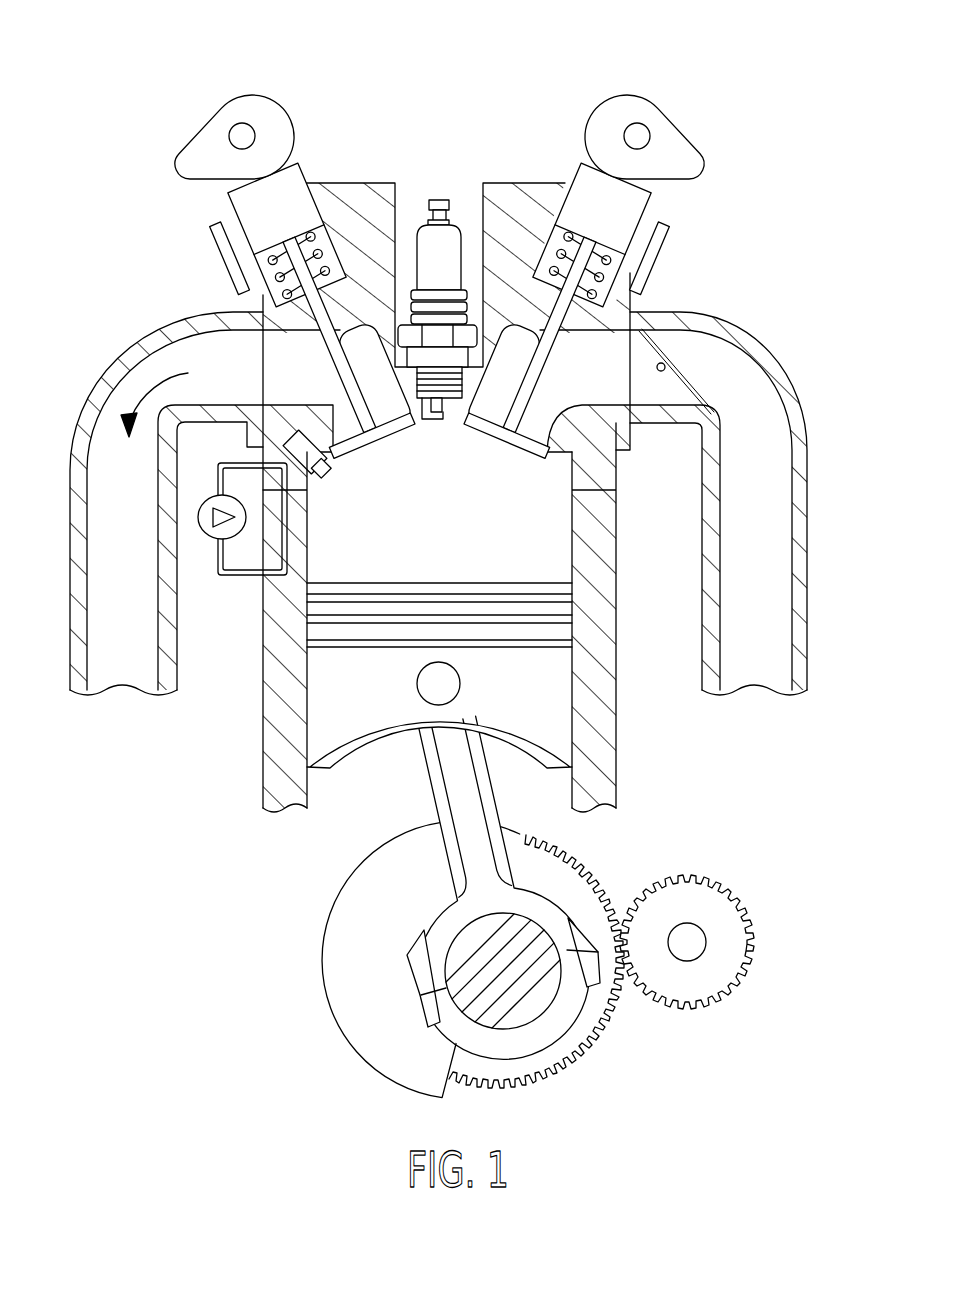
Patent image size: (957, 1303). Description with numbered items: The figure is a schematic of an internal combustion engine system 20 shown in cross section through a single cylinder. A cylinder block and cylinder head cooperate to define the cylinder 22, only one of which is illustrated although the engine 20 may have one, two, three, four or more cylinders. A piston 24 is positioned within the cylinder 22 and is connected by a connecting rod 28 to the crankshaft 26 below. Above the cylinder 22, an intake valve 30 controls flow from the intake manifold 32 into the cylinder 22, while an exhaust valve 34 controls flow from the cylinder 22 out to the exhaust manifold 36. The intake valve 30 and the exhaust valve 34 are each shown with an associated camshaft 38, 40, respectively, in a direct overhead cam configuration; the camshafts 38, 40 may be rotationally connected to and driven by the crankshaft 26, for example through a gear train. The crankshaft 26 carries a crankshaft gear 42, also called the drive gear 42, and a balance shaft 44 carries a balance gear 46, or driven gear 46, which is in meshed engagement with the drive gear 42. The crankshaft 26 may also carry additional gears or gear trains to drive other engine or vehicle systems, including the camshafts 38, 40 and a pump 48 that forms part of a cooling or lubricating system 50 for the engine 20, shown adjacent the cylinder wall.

The internal combustion engine system 20 is at (768, 90).
The cylinder 22 is at (537, 543).
The piston 24 is at (500, 693).
The crankshaft 26 is at (447, 948).
The connecting rod 28 is at (443, 778).
The intake valve 30 is at (662, 252).
The intake manifold 32 is at (790, 323).
The exhaust valve 34 is at (217, 245).
The exhaust manifold 36 is at (135, 323).
The camshaft 38 is at (650, 134).
The camshaft 40 is at (256, 133).
The crankshaft gear 42 is at (582, 873).
The balance shaft 44 is at (690, 940).
The balance gear 46 is at (724, 963).
The pump 48 is at (216, 540).
The cooling or lubricating system 50 is at (247, 575).